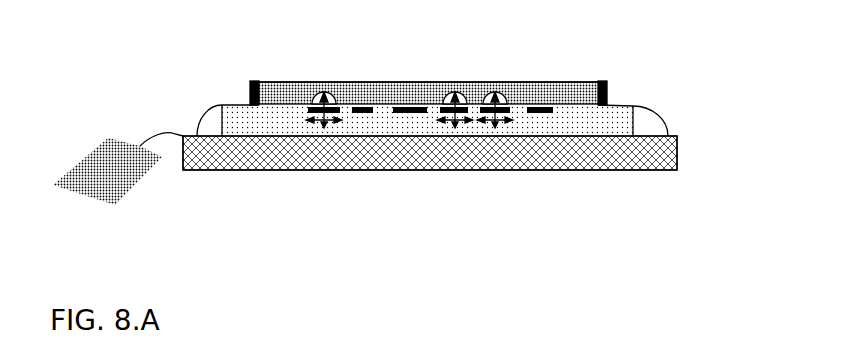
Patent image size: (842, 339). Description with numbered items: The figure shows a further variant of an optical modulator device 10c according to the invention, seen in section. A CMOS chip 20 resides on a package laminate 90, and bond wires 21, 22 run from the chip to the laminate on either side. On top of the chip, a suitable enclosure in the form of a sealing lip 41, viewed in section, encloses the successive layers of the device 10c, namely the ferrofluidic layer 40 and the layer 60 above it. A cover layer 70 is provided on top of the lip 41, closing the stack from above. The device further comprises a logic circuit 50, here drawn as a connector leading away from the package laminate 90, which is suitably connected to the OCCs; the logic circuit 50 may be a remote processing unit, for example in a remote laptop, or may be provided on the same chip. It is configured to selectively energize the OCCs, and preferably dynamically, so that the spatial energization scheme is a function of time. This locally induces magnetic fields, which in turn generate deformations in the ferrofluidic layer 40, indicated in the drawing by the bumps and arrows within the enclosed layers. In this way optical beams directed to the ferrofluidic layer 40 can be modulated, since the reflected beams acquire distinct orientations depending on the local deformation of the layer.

The display device 10c is at (467, 178).
The package laminate 90 is at (367, 147).
The CMOS chip 20 is at (560, 121).
The bond wire 21 is at (213, 105).
The bond wire 22 is at (660, 127).
The ferrofluidic layer 40 is at (583, 102).
The sealing lip 41 is at (248, 92).
The logic circuit 50 is at (138, 147).
The layer 60 is at (410, 88).
The cover layer 70 is at (517, 80).